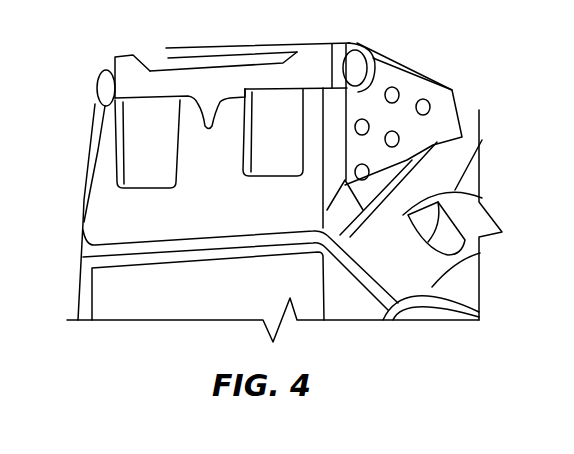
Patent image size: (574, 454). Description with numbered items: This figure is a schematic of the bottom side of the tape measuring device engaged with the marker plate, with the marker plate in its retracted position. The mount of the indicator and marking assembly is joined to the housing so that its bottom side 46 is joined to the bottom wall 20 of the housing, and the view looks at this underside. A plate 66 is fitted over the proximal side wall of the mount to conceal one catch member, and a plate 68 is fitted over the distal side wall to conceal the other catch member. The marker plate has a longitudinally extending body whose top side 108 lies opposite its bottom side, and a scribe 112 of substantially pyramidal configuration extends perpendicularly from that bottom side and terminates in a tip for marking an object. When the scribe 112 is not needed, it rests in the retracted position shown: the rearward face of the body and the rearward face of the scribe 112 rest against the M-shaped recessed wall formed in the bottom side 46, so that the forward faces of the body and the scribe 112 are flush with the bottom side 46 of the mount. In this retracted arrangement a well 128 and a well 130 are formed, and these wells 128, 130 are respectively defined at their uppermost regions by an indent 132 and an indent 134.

The bottom wall 20 is at (133, 302).
The bottom side 46 is at (107, 228).
The plate 66 is at (88, 122).
The plate 68 is at (447, 86).
The top side 108 is at (260, 62).
The scribe 112 is at (213, 103).
The well 128 is at (137, 157).
The well 130 is at (280, 155).
The indent 132 is at (105, 80).
The indent 134 is at (325, 87).